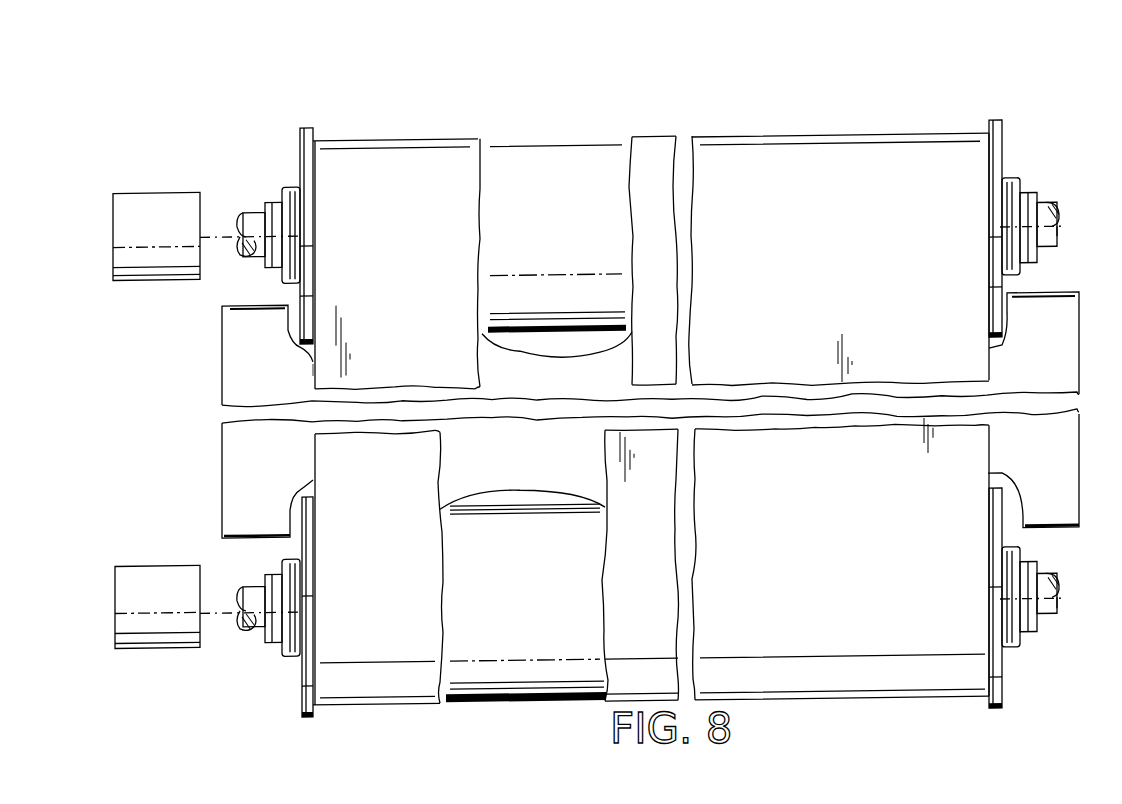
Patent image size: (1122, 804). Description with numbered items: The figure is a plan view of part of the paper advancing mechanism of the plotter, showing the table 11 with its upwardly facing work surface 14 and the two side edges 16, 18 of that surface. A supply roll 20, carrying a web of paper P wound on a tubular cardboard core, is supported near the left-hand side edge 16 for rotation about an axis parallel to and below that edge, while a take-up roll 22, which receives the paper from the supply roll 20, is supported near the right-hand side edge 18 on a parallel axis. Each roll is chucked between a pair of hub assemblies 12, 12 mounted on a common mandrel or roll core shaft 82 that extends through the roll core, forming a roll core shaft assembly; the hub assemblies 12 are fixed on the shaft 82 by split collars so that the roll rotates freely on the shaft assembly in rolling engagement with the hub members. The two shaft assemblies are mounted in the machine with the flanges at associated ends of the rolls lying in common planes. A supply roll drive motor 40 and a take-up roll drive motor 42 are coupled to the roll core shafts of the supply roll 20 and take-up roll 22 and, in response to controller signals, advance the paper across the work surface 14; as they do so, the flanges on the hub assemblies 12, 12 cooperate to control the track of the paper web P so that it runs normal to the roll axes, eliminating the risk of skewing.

The table 11 is at (205, 497).
The hub assembly 12 is at (287, 139).
The work surface 14 is at (237, 460).
The side edge 16 is at (1052, 292).
The side edge 18 is at (1056, 530).
The supply roll 20 is at (600, 138).
The take-up roll 22 is at (496, 704).
The supply roll drive motor 40 is at (173, 204).
The take-up roll drive motor 42 is at (163, 638).
The roll core shaft 82 is at (254, 215).
The paper web P is at (311, 360).